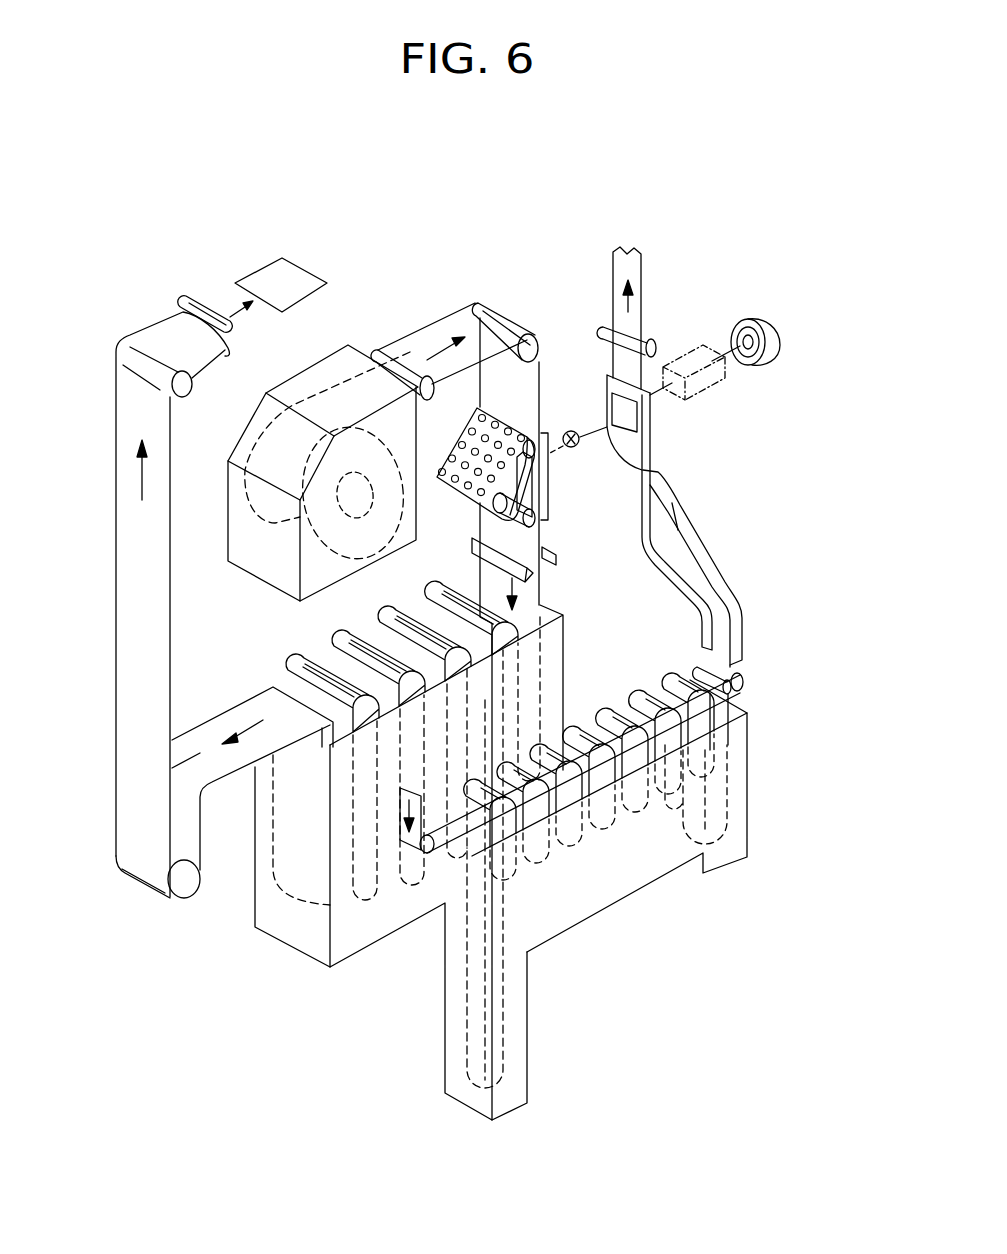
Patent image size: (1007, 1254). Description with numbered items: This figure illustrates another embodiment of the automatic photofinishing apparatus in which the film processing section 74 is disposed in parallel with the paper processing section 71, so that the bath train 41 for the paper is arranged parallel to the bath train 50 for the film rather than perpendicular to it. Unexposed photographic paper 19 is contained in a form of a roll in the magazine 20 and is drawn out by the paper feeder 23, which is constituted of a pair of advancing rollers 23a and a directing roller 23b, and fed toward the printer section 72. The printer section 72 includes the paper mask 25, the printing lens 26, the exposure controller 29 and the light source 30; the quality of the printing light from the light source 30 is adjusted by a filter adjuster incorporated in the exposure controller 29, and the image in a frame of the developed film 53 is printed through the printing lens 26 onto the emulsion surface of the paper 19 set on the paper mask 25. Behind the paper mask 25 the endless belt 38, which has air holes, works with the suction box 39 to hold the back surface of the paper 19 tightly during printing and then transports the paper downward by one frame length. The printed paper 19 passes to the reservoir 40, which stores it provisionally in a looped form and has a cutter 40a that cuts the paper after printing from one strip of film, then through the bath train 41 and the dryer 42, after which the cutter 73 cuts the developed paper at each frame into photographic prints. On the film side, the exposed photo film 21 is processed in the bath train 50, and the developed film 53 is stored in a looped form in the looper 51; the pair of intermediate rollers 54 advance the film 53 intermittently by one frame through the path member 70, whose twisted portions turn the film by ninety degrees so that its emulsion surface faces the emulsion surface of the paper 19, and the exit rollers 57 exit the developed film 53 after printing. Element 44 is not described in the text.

The unexposed photographic paper 19 is at (262, 530).
The magazine 20 is at (328, 378).
The exposed photo film 21 is at (408, 855).
The paper feeder 23 is at (520, 215).
The advancing rollers 23a is at (390, 347).
The directing roller 23b is at (480, 300).
The paper mask 25 is at (549, 505).
The printing lens 26 is at (571, 430).
The exposure controller 29 is at (670, 365).
The light source 30 is at (770, 357).
The endless belt 38 is at (450, 488).
The suction box 39 is at (532, 484).
The reservoir 40 is at (540, 697).
The cutter 40a is at (558, 555).
The train of processing baths 41 is at (448, 586).
The dryer 42 is at (283, 885).
The sheet 44 is at (290, 278).
The train of processing baths 50 is at (653, 820).
The looper 51 is at (732, 793).
The developed film 53 is at (703, 662).
The intermediate rollers 54 is at (744, 686).
The exit rollers 57 is at (603, 334).
The path member 70 is at (710, 563).
The paper processing section 71 is at (358, 917).
The printer section 72 is at (727, 258).
The cutter 73 is at (200, 293).
The film processing section 74 is at (572, 927).